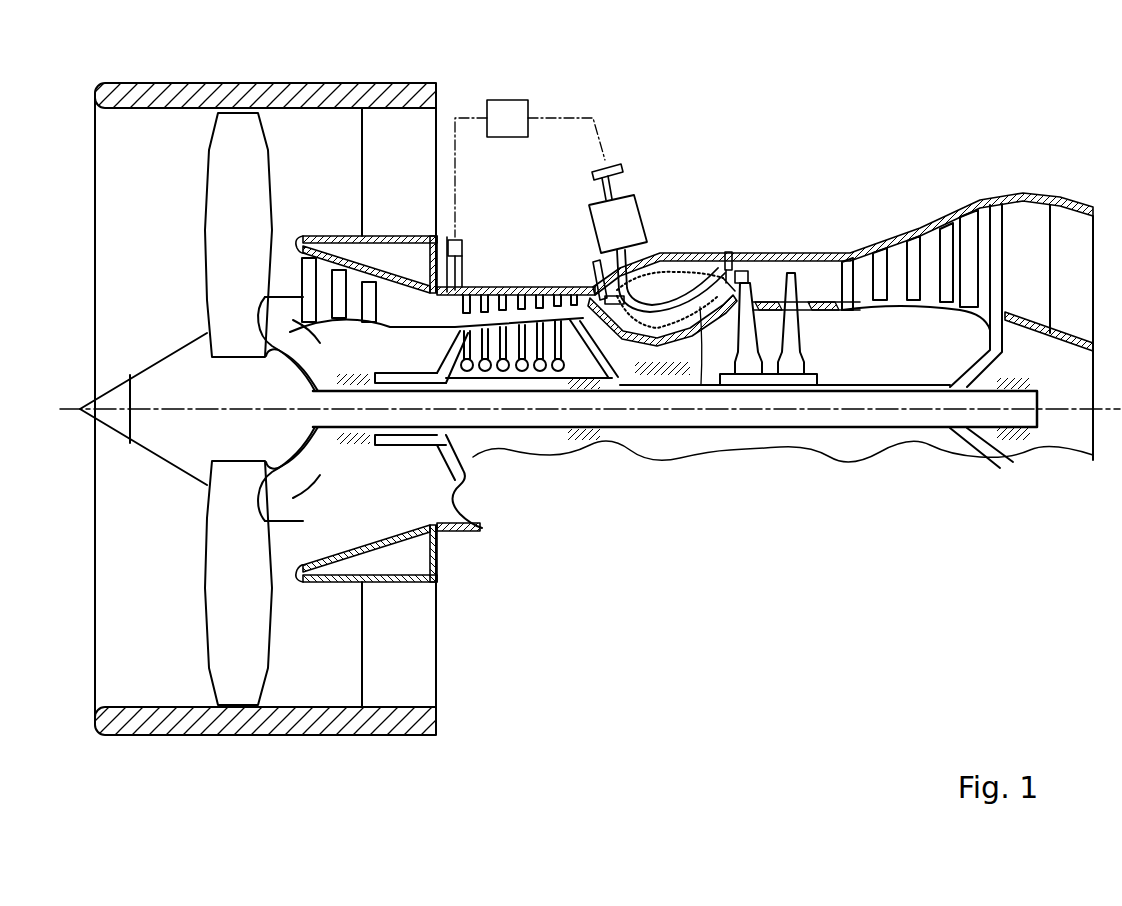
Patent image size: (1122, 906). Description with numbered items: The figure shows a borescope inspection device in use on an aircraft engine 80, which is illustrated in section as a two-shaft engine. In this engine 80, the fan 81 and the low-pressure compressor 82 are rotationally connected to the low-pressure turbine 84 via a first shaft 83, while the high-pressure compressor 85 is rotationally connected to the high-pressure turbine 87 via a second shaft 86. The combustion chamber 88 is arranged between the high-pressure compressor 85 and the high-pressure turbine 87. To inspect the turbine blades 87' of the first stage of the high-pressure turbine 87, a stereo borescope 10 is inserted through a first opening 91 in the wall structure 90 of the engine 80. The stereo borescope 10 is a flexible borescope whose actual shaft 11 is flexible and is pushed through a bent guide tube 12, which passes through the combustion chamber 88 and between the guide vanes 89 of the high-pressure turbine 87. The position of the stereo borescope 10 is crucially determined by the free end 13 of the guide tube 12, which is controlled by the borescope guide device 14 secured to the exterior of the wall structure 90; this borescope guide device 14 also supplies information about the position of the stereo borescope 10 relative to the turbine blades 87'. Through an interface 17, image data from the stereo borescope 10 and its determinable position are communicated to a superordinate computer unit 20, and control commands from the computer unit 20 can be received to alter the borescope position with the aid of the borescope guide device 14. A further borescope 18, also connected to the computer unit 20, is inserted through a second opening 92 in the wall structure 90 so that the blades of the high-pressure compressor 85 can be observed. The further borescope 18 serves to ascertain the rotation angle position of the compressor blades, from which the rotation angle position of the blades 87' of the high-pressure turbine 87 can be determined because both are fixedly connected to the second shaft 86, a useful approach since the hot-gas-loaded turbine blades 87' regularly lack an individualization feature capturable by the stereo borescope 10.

The engine 80 is at (986, 160).
The fan 81 is at (163, 517).
The low-pressure compressor 82 is at (305, 258).
The first shaft 83 is at (921, 426).
The low-pressure turbine 84 is at (915, 248).
The high-pressure compressor 85 is at (467, 376).
The second shaft 86 is at (622, 335).
The high-pressure turbine 87 is at (768, 399).
The turbine blades 87' is at (756, 242).
The combustion chamber 88 is at (655, 335).
The guide vanes 89 is at (714, 283).
The wall structure 90 is at (684, 252).
The first opening 91 is at (598, 270).
The second opening 92 is at (475, 284).
The stereo borescope 10 is at (594, 199).
The shaft 11 is at (754, 276).
The guide tube 12 is at (700, 385).
The free end 13 is at (730, 303).
The borescope guide device 14 is at (590, 223).
The interface 17 is at (609, 170).
The further borescope 18 is at (466, 243).
The computer unit 20 is at (530, 168).